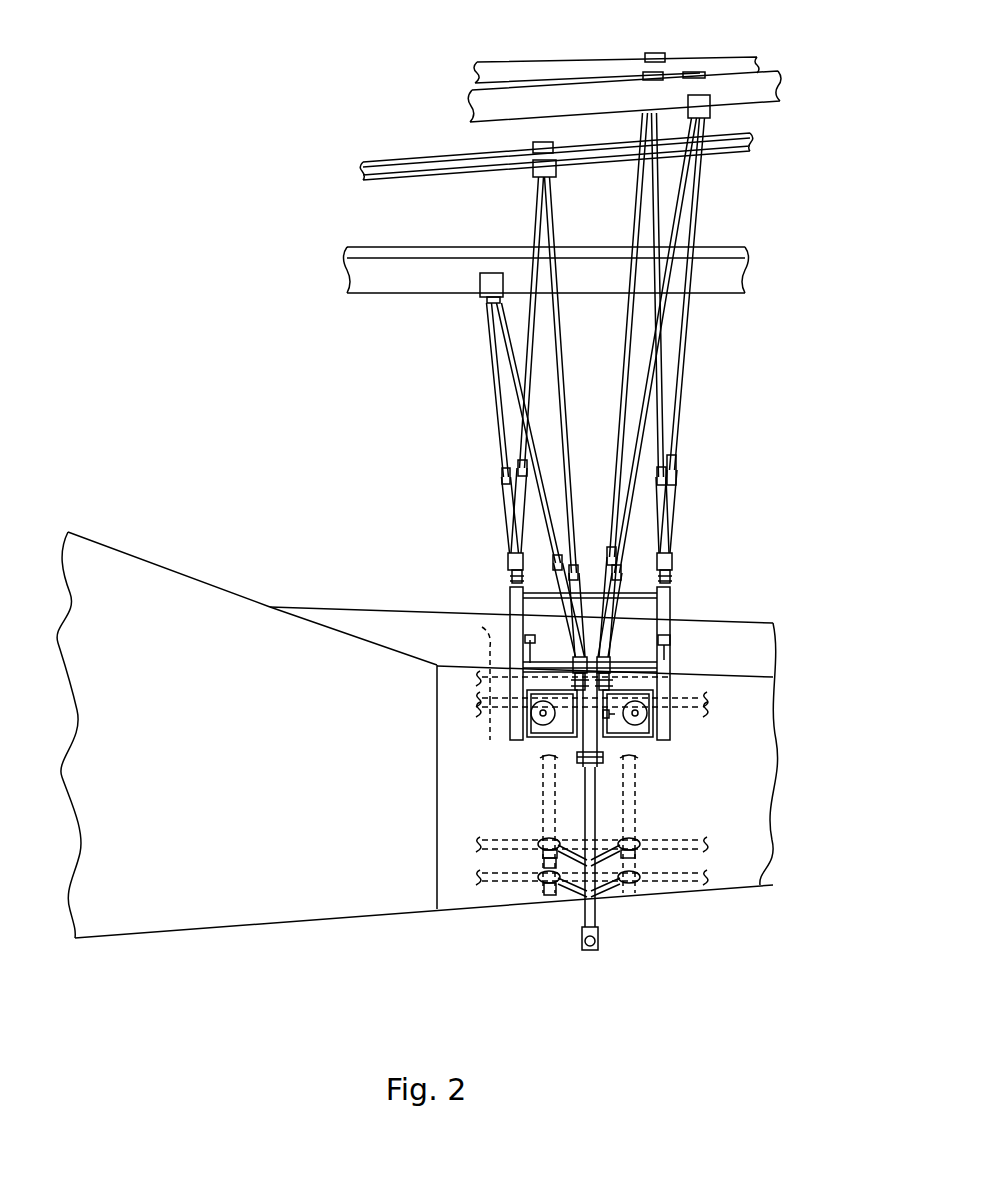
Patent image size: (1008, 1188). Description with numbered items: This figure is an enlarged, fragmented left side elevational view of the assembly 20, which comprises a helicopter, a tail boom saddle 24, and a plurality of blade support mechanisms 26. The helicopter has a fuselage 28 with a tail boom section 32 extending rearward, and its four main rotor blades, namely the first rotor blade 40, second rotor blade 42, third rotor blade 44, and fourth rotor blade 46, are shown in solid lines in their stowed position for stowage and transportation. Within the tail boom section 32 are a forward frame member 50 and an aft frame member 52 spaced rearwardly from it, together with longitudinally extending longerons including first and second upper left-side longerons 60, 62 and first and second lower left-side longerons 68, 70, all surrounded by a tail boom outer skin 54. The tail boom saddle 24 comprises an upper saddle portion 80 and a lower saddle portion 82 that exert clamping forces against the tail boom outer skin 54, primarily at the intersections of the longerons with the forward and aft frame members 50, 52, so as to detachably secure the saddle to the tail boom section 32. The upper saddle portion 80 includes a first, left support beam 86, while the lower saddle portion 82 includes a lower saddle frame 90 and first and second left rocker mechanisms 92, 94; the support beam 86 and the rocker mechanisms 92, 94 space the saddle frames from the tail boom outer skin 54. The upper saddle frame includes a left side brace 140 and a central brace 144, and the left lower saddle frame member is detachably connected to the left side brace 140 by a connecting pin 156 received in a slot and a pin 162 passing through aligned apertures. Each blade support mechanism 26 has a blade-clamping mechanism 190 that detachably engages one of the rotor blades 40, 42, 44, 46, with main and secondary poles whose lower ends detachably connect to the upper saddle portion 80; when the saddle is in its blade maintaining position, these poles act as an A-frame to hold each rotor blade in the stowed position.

The assembly 20 is at (233, 410).
The tail boom saddle 24 is at (584, 662).
The blade support mechanism 26 is at (531, 201).
The fuselage 28 is at (279, 586).
The tail boom section 32 is at (682, 893).
The first rotor blade 40 is at (383, 296).
The second rotor blade 42 is at (390, 160).
The third rotor blade 44 is at (755, 99).
The fourth rotor blade 46 is at (738, 66).
The forward frame member 50 is at (542, 772).
The aft frame member 52 is at (636, 773).
The tail boom outer skin 54 is at (730, 727).
The first upper left-side longeron 60 is at (474, 657).
The second upper left-side longeron 62 is at (490, 731).
The first lower left-side longeron 68 is at (492, 839).
The second lower left-side longeron 70 is at (493, 885).
The upper saddle portion 80 is at (504, 600).
The lower saddle portion 82 is at (600, 805).
The first support beam 86 is at (637, 661).
The lower saddle frame 90 is at (580, 911).
The first left rocker mechanism 92 is at (641, 862).
The second left rocker mechanism 94 is at (612, 894).
The left side brace 140 is at (640, 740).
The central brace 144 is at (594, 592).
The connecting pin 156 is at (575, 765).
The pin 162 is at (616, 706).
The blade-clamping mechanism 190 is at (648, 53).